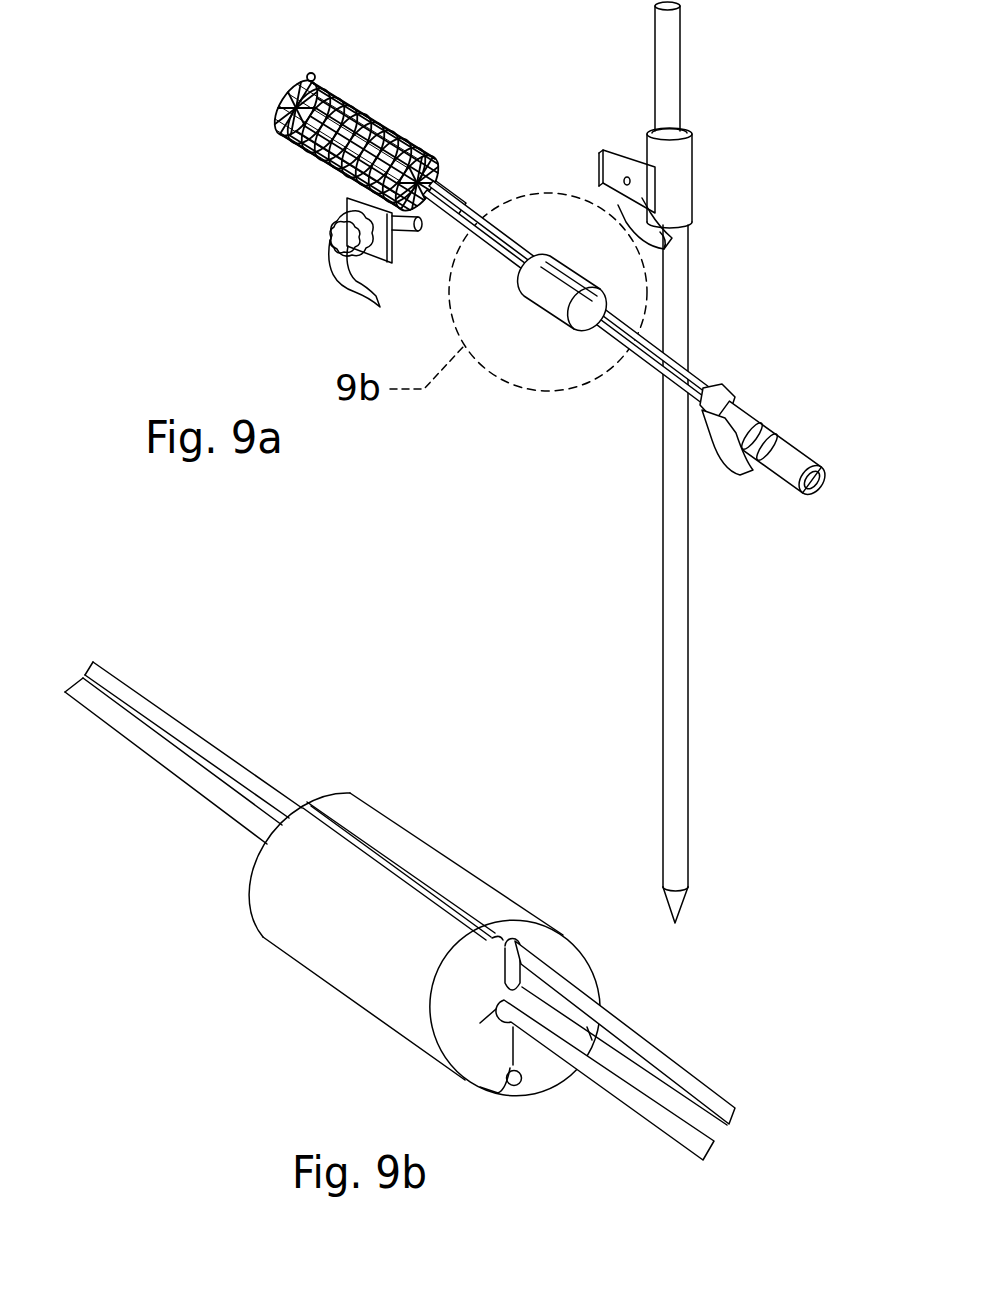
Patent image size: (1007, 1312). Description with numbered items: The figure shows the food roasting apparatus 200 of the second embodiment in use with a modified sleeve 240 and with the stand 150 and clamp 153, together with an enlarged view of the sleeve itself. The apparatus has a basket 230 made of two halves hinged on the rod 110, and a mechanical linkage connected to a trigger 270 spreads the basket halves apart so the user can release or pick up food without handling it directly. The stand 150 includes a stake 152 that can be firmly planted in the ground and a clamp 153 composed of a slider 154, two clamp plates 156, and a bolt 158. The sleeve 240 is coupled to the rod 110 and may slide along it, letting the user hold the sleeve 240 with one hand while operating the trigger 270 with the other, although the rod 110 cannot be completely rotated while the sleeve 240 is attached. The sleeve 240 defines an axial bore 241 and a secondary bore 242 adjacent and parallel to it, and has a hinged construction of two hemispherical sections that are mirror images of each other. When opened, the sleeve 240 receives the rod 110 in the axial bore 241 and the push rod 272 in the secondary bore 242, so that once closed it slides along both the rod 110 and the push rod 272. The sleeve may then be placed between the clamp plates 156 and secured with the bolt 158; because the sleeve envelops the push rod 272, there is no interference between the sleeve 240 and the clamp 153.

In FIG. 9B, the rod 110 is at (617, 1088).
In FIG. 9A, the stand 150 is at (531, 462).
In FIG. 9A, the stake 152 is at (680, 87).
In FIG. 9A, the clamp 153 is at (314, 277).
In FIG. 9A, the slider 154 is at (680, 165).
In FIG. 9A, the clamp plates 156 is at (680, 237).
In FIG. 9A, the bolt 158 is at (335, 242).
In FIG. 9A, the food roasting apparatus 200 is at (643, 367).
In FIG. 9A, the basket 230 is at (410, 100).
In FIG. 9A, the modified sleeve 240 is at (558, 238).
In FIG. 9B, the modified sleeve 240 is at (412, 953).
In FIG. 9B, the axial bore 241 is at (505, 1008).
In FIG. 9B, the secondary bore 242 is at (518, 945).
In FIG. 9A, the trigger 270 is at (732, 460).
In FIG. 9B, the push rod 272 is at (712, 1094).